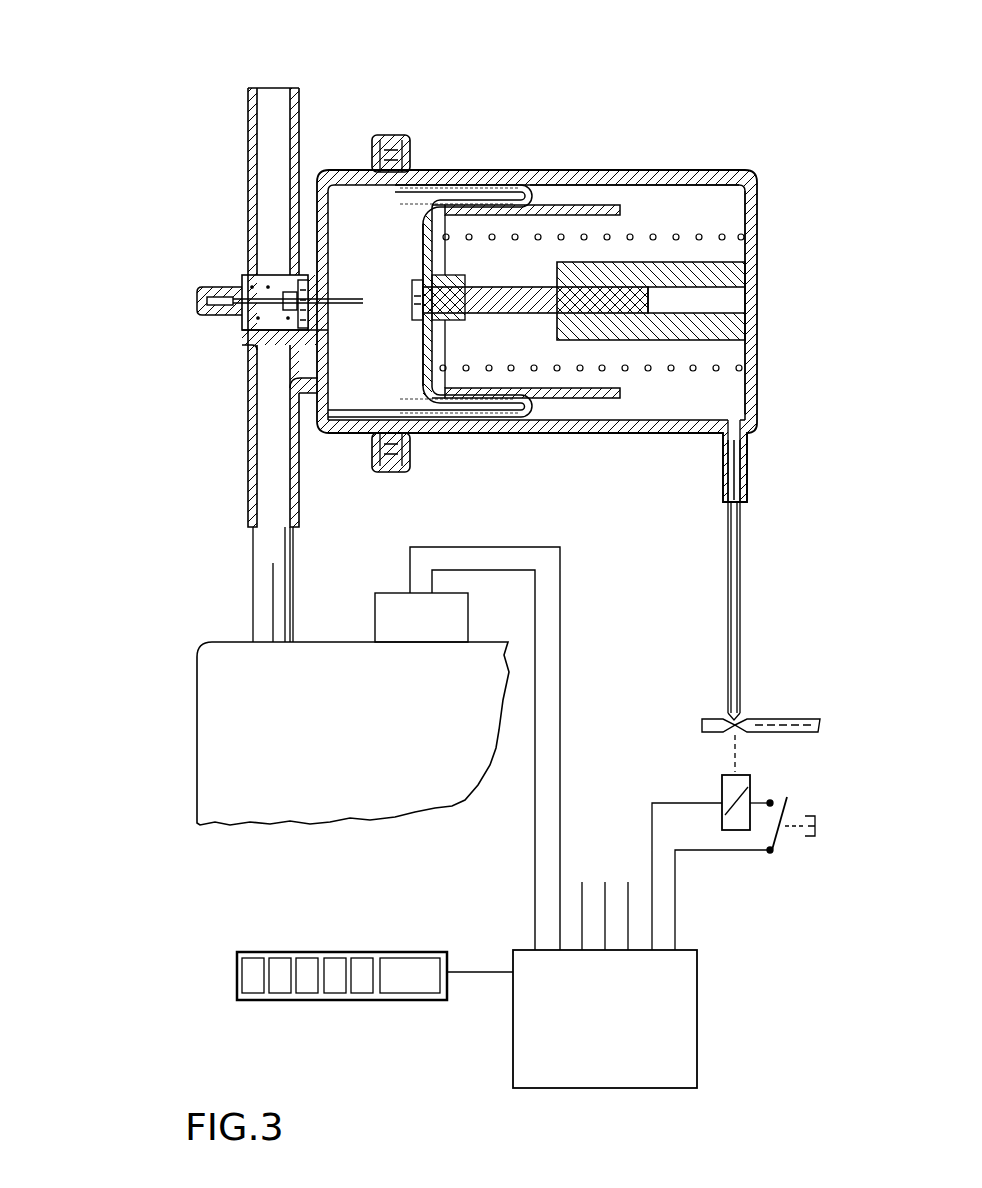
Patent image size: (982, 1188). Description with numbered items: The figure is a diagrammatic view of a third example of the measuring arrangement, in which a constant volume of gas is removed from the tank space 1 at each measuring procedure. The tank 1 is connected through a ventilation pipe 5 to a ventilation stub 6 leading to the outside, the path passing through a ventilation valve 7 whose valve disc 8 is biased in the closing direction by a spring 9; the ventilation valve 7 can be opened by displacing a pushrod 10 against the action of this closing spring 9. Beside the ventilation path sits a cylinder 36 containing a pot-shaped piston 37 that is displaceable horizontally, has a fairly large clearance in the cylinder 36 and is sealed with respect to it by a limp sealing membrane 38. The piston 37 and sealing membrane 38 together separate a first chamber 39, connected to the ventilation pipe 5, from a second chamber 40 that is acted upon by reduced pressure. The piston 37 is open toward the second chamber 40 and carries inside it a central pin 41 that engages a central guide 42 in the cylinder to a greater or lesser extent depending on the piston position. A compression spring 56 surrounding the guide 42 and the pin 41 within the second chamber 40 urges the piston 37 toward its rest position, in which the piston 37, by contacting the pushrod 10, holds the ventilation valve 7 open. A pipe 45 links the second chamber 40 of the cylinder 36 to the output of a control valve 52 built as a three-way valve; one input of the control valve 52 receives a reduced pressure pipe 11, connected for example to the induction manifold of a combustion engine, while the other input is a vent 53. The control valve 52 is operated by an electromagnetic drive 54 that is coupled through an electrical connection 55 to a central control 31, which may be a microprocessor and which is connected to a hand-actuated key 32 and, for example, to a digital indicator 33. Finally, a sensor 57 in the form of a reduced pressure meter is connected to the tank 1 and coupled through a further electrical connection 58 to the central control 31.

The tank space 1 is at (250, 677).
The ventilation pipe 5 is at (268, 577).
The ventilation stub 6 is at (267, 168).
The ventilation valve 7 is at (190, 331).
The valve disc 8 is at (290, 315).
The spring 9 is at (267, 285).
The pushrod 10 is at (300, 296).
The reduced pressure pipe 11 is at (778, 723).
The central control 31 is at (604, 1037).
The key 32 is at (783, 827).
The digital indicator 33 is at (331, 985).
The cylinder 36 is at (493, 175).
The piston 37 is at (575, 207).
The sealing membrane 38 is at (528, 186).
The first chamber 39 is at (367, 222).
The second chamber 40 is at (643, 205).
The central pin 41 is at (510, 300).
The central guide 42 is at (698, 273).
The pipe 45 is at (730, 468).
The control valve 52 is at (704, 696).
The vent 53 is at (713, 725).
The electromagnetic drive 54 is at (737, 785).
The electrical connection 55 is at (675, 863).
The compression spring 56 is at (698, 234).
The sensor 57 is at (400, 610).
The electrical connection 58 is at (508, 568).